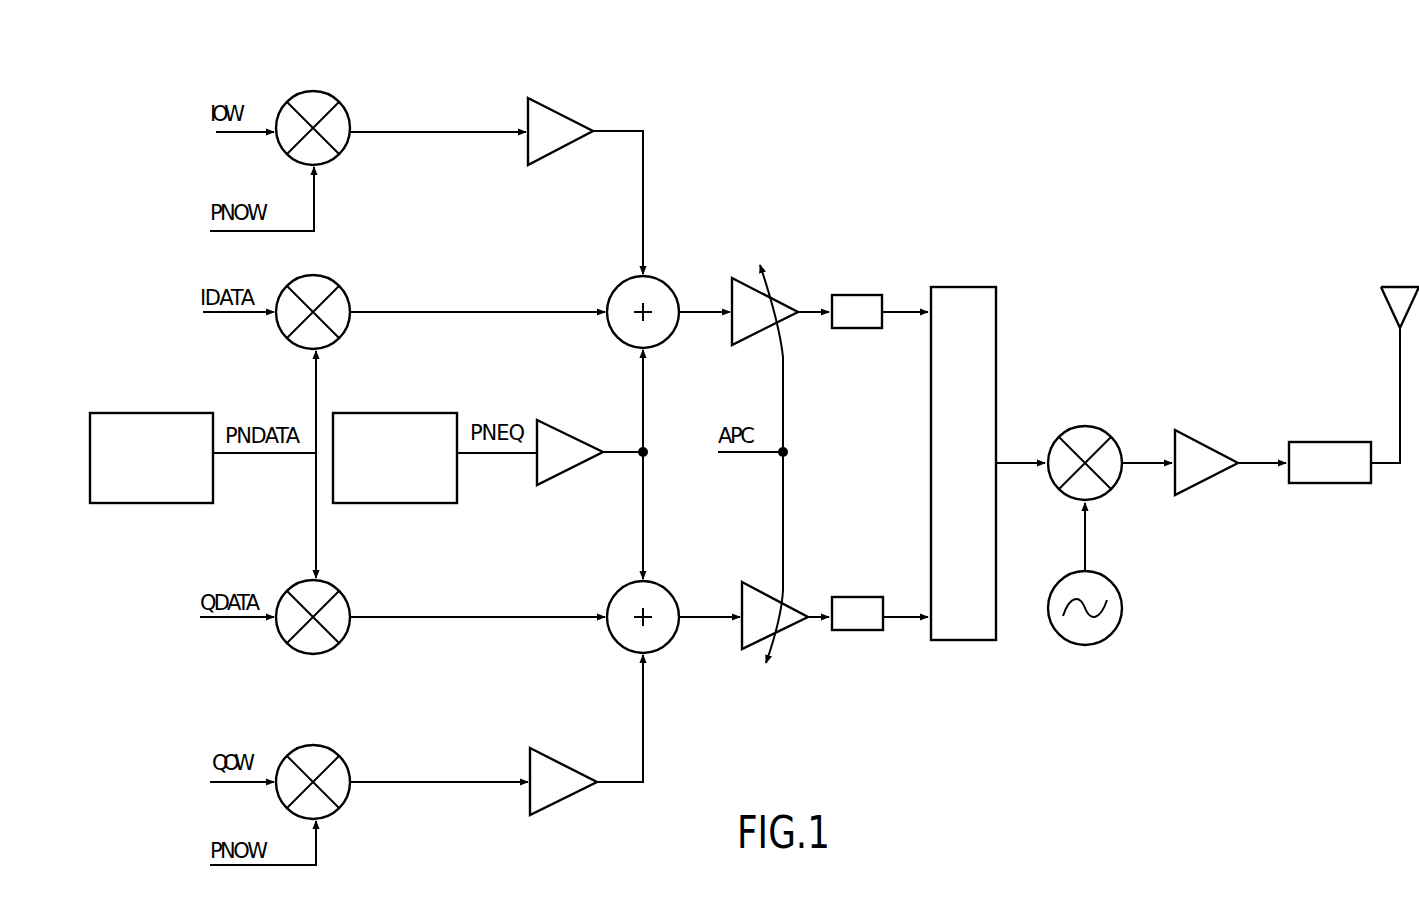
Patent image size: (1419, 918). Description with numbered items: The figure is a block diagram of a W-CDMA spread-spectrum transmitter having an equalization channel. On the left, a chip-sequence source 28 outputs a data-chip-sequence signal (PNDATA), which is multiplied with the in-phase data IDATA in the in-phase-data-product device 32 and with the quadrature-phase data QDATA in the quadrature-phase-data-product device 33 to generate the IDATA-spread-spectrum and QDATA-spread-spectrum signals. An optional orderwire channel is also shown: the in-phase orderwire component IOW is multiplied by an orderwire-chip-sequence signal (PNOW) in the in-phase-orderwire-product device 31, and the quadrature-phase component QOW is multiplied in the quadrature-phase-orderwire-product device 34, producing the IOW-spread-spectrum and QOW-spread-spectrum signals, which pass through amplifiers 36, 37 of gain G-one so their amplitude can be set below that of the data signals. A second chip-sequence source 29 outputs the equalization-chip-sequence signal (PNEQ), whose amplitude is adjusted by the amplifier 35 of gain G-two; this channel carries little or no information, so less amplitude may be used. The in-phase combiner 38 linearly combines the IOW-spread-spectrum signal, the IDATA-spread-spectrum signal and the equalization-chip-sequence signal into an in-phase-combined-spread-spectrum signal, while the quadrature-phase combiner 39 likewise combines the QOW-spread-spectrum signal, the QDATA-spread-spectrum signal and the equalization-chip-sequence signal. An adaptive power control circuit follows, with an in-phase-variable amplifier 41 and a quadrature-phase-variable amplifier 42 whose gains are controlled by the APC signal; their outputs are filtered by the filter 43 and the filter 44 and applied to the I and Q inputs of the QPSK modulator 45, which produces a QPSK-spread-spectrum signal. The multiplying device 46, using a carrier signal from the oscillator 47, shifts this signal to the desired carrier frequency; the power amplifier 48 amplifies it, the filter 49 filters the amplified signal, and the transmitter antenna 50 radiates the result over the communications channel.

The chip-sequence source 28 is at (155, 413).
The chip-sequence source 29 is at (400, 413).
The in-phase-orderwire-product device 31 is at (340, 100).
The in-phase-data-product device 32 is at (340, 285).
The quadrature-phase-data-product device 33 is at (342, 588).
The quadrature-phase-orderwire-product device 34 is at (340, 755).
The amplifier 35 is at (556, 424).
The amplifier 36 is at (562, 110).
The amplifier 37 is at (543, 754).
The in-phase combiner 38 is at (670, 285).
The quadrature-phase combiner 39 is at (673, 588).
The in-phase-variable amplifier 41 is at (786, 296).
The quadrature-phase-variable amplifier 42 is at (790, 600).
The filter 43 is at (855, 295).
The filter 44 is at (858, 597).
The QPSK modulator 45 is at (997, 366).
The multiplying device 46 is at (1112, 437).
The oscillator 47 is at (1118, 594).
The power amplifier 48 is at (1207, 447).
The filter 49 is at (1303, 442).
The transmitter antenna 50 is at (1393, 287).